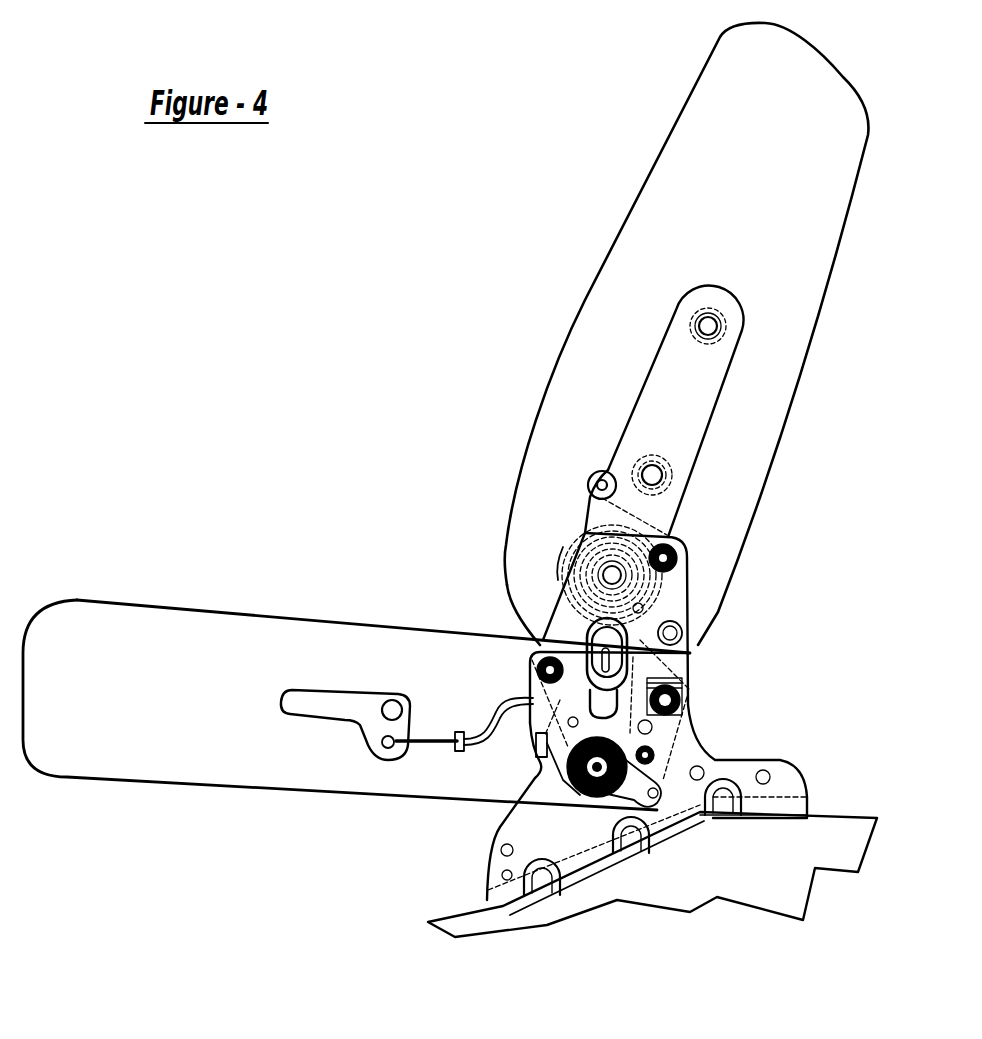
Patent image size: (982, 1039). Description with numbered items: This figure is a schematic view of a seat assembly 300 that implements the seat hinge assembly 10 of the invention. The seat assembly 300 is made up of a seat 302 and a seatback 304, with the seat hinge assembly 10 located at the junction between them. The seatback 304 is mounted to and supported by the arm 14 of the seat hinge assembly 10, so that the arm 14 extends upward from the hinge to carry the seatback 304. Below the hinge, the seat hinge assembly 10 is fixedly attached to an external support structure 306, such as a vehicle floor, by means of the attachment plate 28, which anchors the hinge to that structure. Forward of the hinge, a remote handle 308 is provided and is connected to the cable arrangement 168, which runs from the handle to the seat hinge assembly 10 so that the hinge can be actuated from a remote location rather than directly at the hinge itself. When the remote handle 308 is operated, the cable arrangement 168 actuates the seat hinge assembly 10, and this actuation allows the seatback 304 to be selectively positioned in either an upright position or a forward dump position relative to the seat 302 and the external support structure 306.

The seat assembly 300 is at (258, 347).
The seatback 304 is at (668, 167).
The arm 14 is at (688, 413).
The seat hinge assembly 10 is at (696, 586).
The seat 302 is at (96, 636).
The remote handle 308 is at (325, 700).
The cable arrangement 168 is at (498, 694).
The external support structure 306 is at (841, 818).
The attachment plate 28 is at (683, 835).